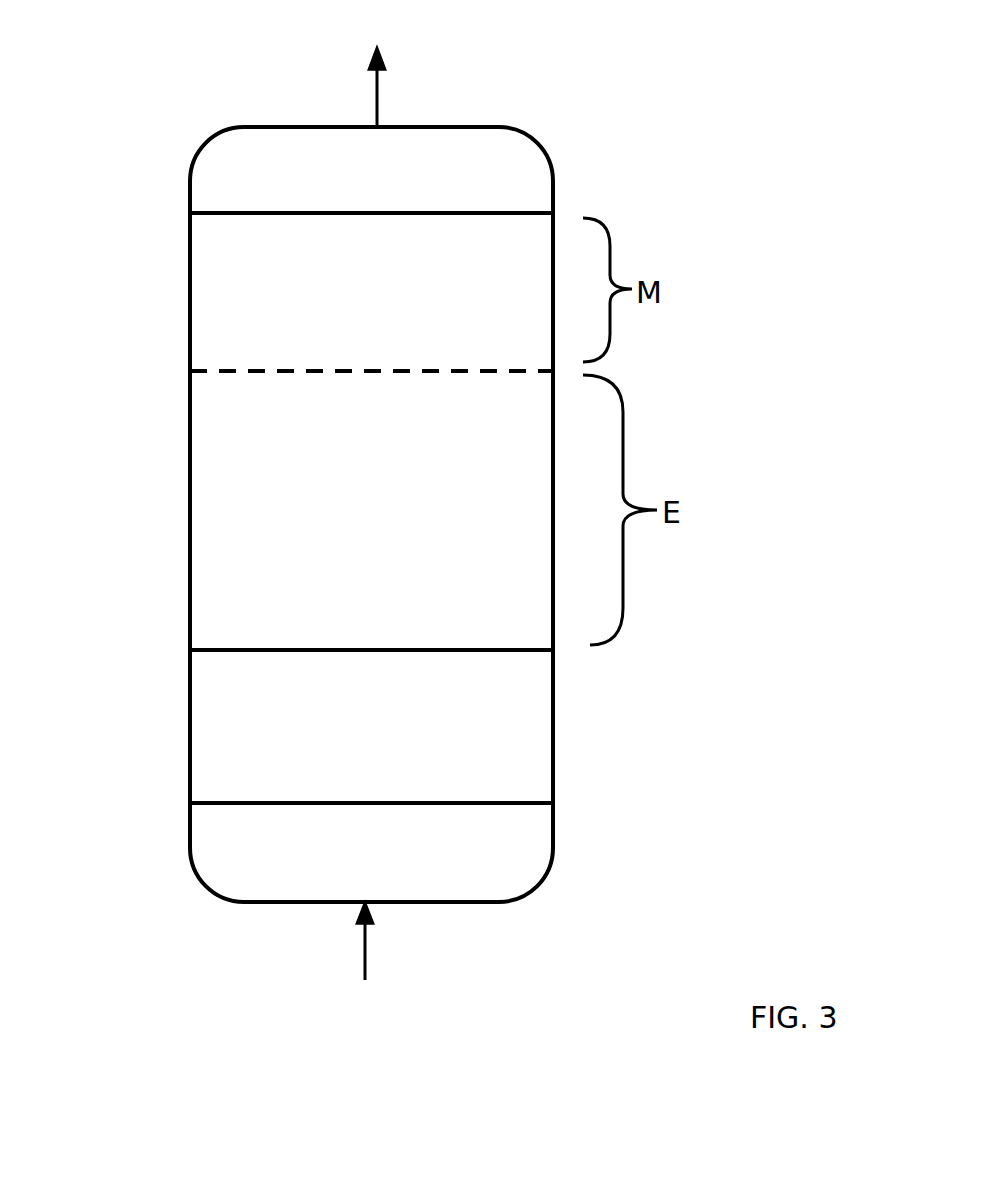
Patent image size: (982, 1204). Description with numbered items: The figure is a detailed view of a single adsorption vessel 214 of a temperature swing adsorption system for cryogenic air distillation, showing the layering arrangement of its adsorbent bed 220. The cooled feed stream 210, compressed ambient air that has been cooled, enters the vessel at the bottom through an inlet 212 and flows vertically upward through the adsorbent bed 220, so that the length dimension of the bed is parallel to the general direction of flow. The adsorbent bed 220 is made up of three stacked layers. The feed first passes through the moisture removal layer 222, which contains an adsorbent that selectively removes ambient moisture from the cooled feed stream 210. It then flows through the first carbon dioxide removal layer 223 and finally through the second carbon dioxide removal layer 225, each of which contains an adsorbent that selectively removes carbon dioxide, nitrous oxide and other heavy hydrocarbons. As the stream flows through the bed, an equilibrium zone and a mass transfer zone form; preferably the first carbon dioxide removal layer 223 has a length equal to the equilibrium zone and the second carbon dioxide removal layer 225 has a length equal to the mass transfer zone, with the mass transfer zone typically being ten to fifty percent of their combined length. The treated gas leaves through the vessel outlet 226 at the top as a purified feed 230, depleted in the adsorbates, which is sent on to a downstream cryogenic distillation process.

The cooled feed stream 210 is at (367, 947).
The inlet 212 is at (360, 903).
The adsorption vessel 214 is at (208, 884).
The adsorbent bed 220 is at (157, 215).
The moisture removal layer 222 is at (371, 751).
The first carbon dioxide removal layer 223 is at (371, 565).
The second carbon dioxide removal layer 225 is at (371, 324).
The vessel outlet 226 is at (375, 125).
The purified feed 230 is at (378, 86).